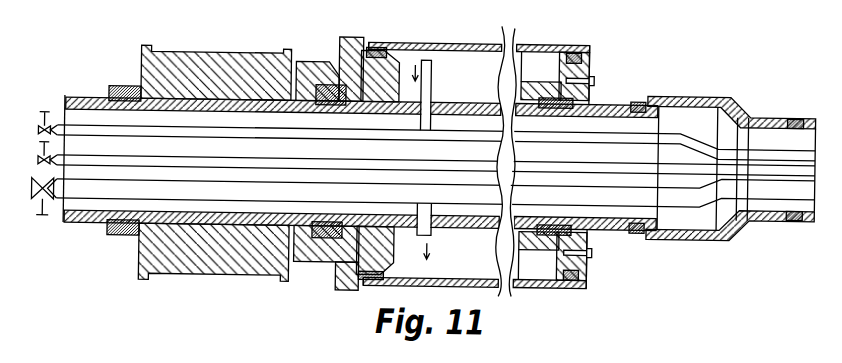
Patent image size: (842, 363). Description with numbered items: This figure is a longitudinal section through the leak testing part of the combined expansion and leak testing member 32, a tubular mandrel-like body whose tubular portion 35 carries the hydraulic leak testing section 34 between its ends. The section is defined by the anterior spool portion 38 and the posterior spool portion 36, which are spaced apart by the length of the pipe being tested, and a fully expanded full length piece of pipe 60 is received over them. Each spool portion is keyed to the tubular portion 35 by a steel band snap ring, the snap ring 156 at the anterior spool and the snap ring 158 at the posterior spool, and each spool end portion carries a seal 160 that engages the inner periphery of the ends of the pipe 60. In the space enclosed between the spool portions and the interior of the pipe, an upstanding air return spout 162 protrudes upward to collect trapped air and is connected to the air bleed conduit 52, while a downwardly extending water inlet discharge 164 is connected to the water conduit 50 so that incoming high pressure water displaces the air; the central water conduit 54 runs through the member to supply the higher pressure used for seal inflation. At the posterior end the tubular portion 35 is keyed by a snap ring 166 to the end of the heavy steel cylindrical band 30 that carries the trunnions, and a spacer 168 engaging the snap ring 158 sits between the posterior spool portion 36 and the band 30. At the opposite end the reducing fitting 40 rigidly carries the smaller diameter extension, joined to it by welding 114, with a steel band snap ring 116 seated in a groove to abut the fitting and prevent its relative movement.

The cylindrical band 30 is at (207, 256).
The combined expansion and leak testing member 32 is at (491, 88).
The hydraulic leak testing section 34 is at (488, 31).
The tubular portion 35 is at (617, 95).
The posterior spool portion 36 is at (350, 34).
The anterior spool portion 38 is at (561, 61).
The reducing fitting 40 is at (713, 229).
The water conduit 50 is at (93, 190).
The air bleed conduit 52 is at (60, 125).
The central water conduit 54 is at (600, 155).
The pipe 60 is at (434, 38).
The welding 114 is at (784, 110).
The snap ring 116 is at (798, 209).
The snap ring 156 is at (555, 88).
The snap ring 158 is at (332, 83).
The seal 160 is at (370, 46).
The air return spout 162 is at (428, 75).
The water inlet discharge 164 is at (433, 238).
The snap ring 166 is at (119, 84).
The spacer 168 is at (333, 246).